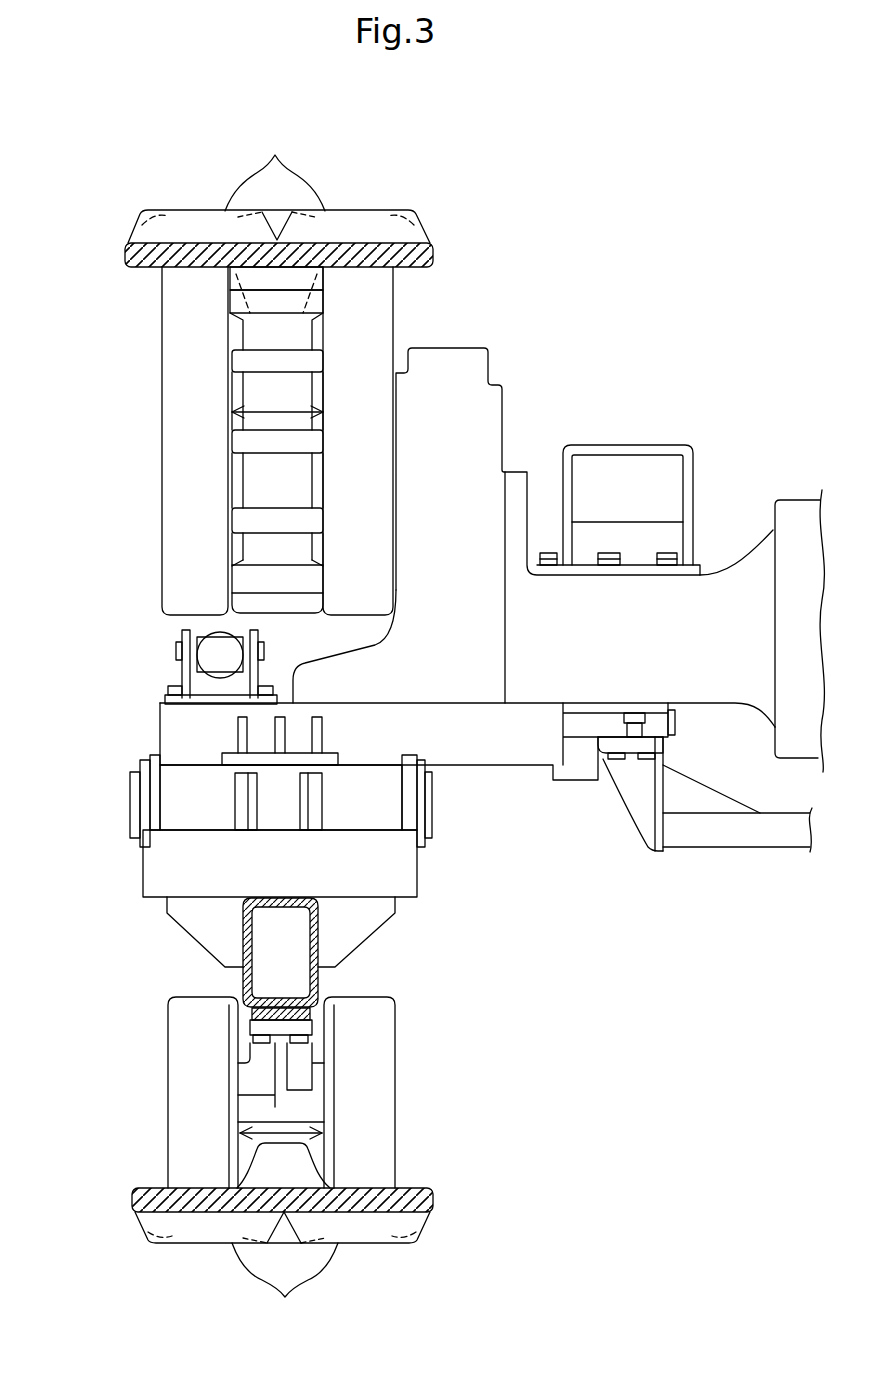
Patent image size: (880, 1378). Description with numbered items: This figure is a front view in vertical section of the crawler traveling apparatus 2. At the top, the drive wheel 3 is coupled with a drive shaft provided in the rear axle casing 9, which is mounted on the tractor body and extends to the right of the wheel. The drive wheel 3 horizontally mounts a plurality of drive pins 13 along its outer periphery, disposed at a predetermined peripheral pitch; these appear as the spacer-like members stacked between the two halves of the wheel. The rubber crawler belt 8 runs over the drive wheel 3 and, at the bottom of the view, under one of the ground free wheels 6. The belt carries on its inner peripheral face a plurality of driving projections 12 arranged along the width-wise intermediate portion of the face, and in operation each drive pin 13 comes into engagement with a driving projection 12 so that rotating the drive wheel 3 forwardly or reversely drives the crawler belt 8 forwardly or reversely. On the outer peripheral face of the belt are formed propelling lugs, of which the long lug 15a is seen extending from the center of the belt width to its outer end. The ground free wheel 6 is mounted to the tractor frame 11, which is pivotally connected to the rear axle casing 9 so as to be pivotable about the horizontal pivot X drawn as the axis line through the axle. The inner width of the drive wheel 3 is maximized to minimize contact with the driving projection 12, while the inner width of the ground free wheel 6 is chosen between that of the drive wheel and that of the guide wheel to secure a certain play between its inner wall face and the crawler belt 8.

The crawler traveling apparatus 2 is at (120, 188).
The drive wheel 3 is at (170, 485).
The ground free wheel 6 is at (170, 1035).
The rubber crawler belt 8 is at (135, 268).
The rear axle casing 9 is at (498, 408).
The tractor frame 11 is at (318, 948).
The driving projection 12 is at (308, 1157).
The drive pin 13 is at (274, 300).
The long lug 15a is at (281, 728).
The horizontal pivot X is at (445, 803).